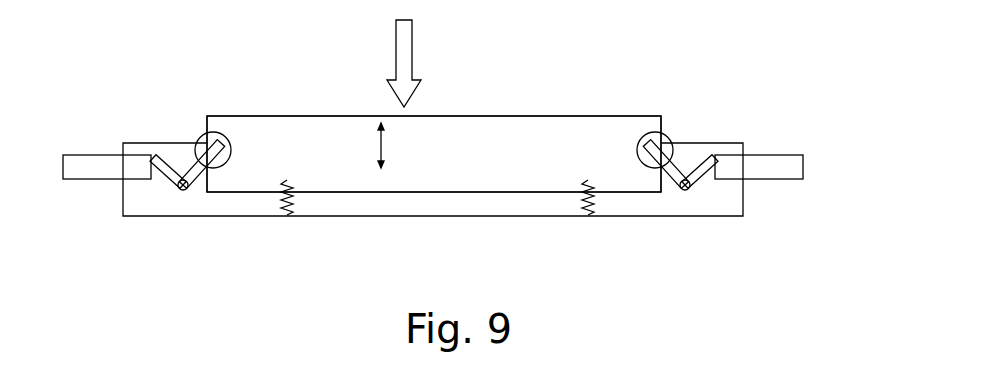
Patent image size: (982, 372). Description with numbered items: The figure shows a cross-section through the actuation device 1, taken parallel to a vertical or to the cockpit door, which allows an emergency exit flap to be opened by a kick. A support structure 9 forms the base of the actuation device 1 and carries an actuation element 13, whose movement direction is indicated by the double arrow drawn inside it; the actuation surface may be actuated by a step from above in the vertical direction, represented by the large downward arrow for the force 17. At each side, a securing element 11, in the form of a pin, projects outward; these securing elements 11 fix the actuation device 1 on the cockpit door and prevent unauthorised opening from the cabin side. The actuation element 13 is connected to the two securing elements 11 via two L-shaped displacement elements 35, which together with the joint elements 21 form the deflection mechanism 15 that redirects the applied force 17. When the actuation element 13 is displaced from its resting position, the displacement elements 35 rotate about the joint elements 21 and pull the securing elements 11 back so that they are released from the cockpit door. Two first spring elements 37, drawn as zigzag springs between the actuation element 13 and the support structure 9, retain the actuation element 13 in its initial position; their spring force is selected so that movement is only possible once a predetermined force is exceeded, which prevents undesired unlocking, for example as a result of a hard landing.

The actuation device 1 is at (608, 113).
The support structure 9 is at (227, 200).
The securing element 11 is at (85, 180).
The actuation element 13 is at (262, 114).
The deflection mechanism 15 is at (175, 200).
The force 17 is at (405, 50).
The joint element 21 is at (175, 168).
The displacement element 35 is at (196, 148).
The first spring element 37 is at (287, 215).